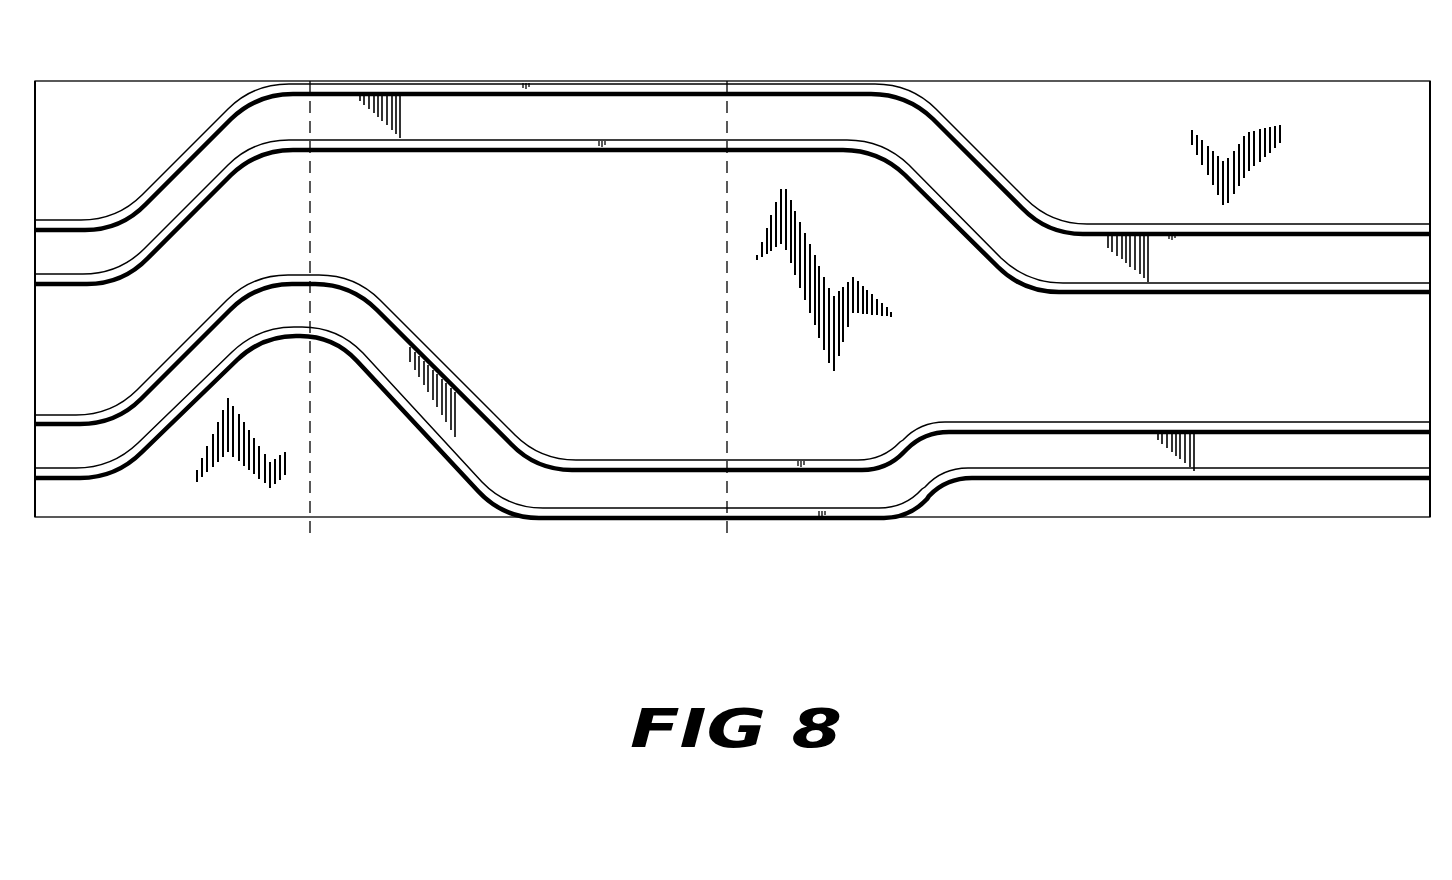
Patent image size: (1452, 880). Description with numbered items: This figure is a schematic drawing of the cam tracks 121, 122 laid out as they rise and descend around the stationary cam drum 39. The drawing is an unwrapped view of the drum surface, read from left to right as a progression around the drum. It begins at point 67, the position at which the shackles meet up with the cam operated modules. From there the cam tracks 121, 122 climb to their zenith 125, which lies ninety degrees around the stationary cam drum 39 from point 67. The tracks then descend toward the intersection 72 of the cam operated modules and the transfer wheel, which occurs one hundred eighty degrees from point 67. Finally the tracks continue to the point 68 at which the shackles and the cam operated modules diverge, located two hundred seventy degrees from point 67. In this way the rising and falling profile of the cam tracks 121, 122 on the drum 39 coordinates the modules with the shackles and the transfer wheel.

The stationary cam drum 39 is at (1153, 100).
The point at which the shackles meet the cam operated modules 67 is at (35, 521).
The point at which the shackles and cam operated modules diverge 68 is at (1430, 520).
The intersection of the cam operated modules and the transfer wheel 72 is at (727, 537).
The zenith 125 is at (310, 537).
The cam track 121 is at (571, 122).
The cam track 122 is at (586, 501).